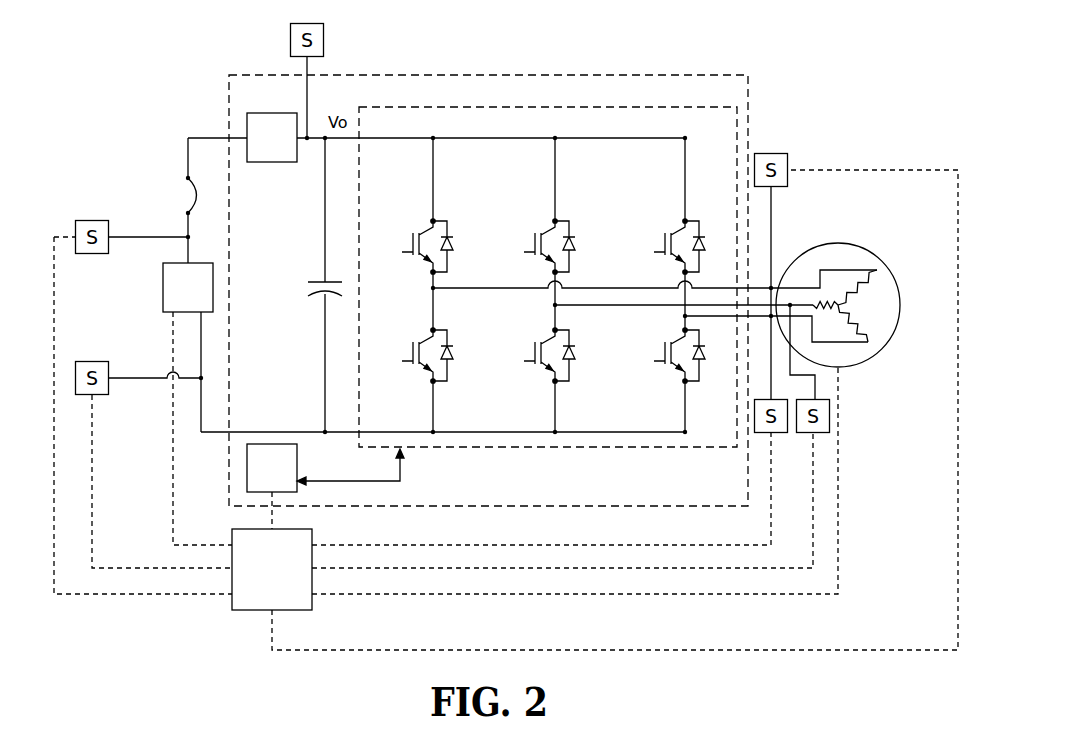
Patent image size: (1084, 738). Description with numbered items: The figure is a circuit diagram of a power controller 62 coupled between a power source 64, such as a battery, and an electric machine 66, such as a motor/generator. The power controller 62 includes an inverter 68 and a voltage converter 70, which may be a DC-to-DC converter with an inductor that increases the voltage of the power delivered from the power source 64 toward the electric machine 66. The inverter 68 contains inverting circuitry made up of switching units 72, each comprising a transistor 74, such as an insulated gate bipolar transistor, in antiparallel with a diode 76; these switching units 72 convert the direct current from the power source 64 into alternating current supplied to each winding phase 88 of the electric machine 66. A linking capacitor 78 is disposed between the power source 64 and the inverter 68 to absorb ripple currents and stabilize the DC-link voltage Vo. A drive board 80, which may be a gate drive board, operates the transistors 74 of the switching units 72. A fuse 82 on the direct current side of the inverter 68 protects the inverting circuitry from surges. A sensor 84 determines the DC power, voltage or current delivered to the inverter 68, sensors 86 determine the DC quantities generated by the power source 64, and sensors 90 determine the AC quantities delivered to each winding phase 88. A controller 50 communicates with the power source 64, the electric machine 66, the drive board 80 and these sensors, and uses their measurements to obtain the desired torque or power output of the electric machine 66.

The controller 50 is at (228, 537).
The power controller 62 is at (654, 74).
The power source 64 is at (179, 298).
The electric machine 66 is at (838, 243).
The inverter 68 is at (592, 106).
The voltage converter 70 is at (263, 148).
The switching unit 72 is at (535, 287).
The transistor 74 is at (523, 285).
The diode 76 is at (582, 304).
The linking capacitor 78 is at (321, 279).
The drive board 80 is at (263, 478).
The fuse 82 is at (185, 212).
The sensor 84 is at (323, 40).
The sensors 86 is at (76, 228).
The winding phase 88 is at (830, 300).
The sensors 90 is at (788, 160).